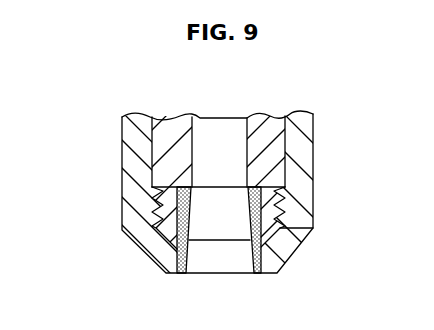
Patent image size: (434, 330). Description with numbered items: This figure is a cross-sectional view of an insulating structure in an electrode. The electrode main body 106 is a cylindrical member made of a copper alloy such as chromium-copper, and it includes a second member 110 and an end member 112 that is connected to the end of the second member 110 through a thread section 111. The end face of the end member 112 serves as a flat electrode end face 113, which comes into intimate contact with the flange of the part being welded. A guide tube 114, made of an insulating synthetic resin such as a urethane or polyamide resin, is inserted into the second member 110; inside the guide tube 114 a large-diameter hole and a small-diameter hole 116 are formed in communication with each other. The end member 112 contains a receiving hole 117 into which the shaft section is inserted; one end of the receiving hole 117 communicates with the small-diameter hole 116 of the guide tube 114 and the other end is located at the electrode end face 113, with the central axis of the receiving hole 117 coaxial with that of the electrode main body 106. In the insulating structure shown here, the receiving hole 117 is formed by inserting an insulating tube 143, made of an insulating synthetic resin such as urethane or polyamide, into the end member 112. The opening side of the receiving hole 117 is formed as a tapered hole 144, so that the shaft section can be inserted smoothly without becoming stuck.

The electrode main body 106 is at (318, 143).
The second member 110 is at (130, 133).
The thread section 111 is at (282, 206).
The end member 112 is at (138, 247).
The electrode end face 113 is at (177, 280).
The guide tube 114 is at (152, 164).
The small-diameter hole 116 is at (196, 140).
The receiving hole 117 is at (193, 225).
The insulating tube 143 is at (268, 234).
The tapered hole 144 is at (248, 257).